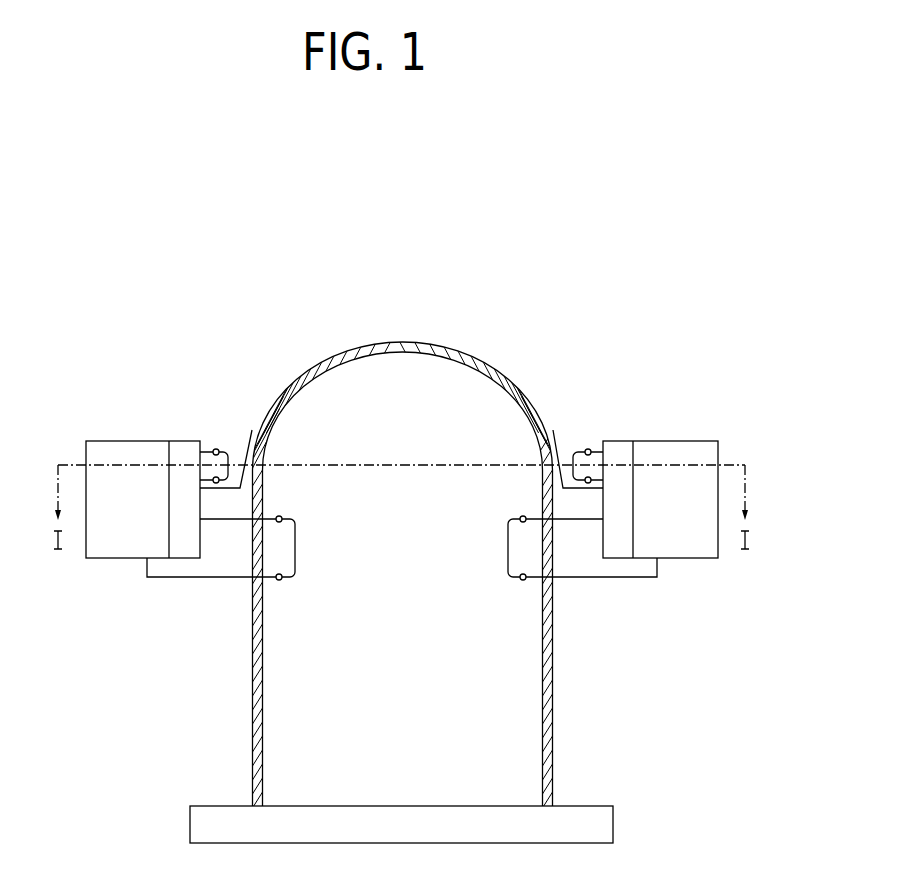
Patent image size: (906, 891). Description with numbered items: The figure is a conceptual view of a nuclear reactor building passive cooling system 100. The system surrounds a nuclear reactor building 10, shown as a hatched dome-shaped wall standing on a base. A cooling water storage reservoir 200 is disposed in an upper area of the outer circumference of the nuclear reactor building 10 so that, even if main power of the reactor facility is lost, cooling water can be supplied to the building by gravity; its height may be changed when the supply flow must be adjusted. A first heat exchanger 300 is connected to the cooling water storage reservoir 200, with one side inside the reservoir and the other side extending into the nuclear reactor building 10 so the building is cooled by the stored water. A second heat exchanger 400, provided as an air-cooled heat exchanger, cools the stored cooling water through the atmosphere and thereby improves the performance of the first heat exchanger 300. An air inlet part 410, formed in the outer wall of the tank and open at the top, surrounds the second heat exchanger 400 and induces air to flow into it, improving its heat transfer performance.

The nuclear reactor building 10 is at (395, 342).
The nuclear reactor building passive cooling system 100 is at (568, 247).
The cooling water storage reservoir 200 is at (668, 425).
The first heat exchanger 300 is at (508, 580).
The second heat exchanger 400 is at (205, 452).
The air inlet part 410 is at (248, 430).